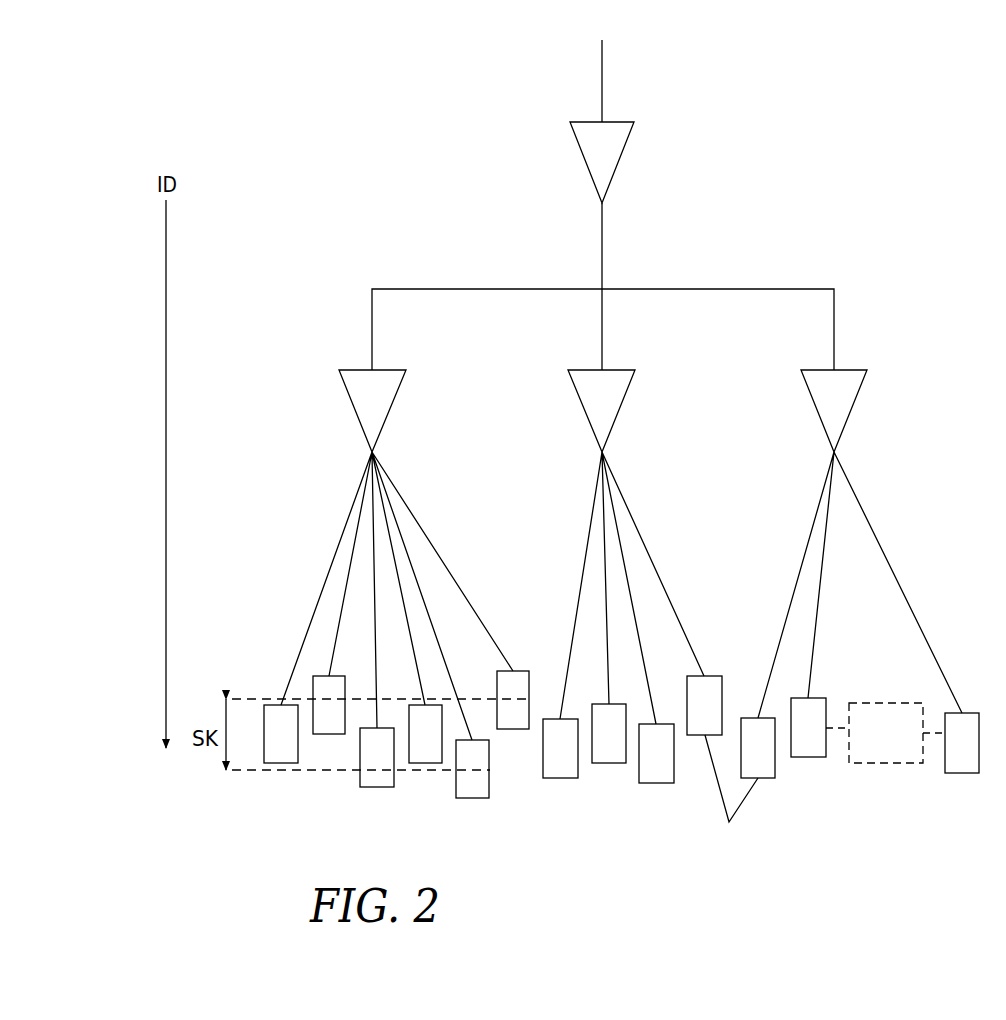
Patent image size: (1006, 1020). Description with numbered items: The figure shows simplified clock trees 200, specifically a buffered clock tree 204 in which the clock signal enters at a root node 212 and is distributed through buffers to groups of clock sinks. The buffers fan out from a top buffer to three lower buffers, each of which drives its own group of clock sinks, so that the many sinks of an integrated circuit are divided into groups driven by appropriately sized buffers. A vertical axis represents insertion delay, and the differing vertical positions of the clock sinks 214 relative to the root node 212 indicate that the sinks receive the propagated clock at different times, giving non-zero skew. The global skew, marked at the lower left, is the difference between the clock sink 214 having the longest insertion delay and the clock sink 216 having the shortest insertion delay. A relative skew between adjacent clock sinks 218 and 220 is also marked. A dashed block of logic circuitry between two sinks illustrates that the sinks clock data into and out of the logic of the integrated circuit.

The clock trees 200 is at (839, 41).
The buffered clock tree 204 is at (549, 172).
The root node 212 is at (601, 83).
The clock sink 214 is at (472, 798).
The clock sink 216 is at (508, 671).
The clock sink 218 is at (712, 676).
The clock sink 220 is at (766, 778).